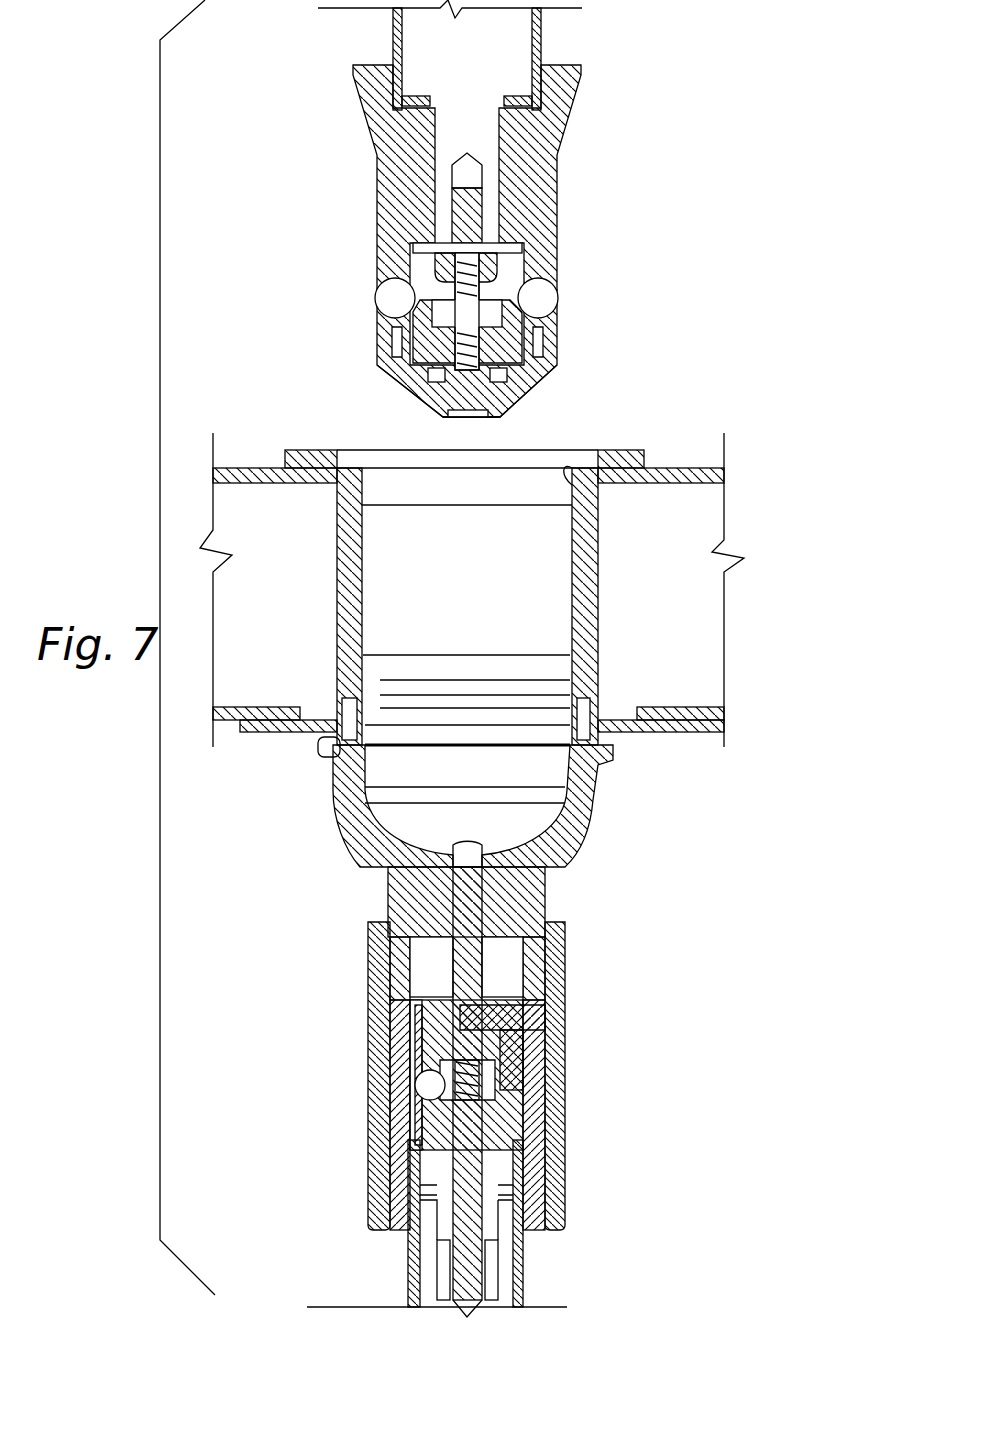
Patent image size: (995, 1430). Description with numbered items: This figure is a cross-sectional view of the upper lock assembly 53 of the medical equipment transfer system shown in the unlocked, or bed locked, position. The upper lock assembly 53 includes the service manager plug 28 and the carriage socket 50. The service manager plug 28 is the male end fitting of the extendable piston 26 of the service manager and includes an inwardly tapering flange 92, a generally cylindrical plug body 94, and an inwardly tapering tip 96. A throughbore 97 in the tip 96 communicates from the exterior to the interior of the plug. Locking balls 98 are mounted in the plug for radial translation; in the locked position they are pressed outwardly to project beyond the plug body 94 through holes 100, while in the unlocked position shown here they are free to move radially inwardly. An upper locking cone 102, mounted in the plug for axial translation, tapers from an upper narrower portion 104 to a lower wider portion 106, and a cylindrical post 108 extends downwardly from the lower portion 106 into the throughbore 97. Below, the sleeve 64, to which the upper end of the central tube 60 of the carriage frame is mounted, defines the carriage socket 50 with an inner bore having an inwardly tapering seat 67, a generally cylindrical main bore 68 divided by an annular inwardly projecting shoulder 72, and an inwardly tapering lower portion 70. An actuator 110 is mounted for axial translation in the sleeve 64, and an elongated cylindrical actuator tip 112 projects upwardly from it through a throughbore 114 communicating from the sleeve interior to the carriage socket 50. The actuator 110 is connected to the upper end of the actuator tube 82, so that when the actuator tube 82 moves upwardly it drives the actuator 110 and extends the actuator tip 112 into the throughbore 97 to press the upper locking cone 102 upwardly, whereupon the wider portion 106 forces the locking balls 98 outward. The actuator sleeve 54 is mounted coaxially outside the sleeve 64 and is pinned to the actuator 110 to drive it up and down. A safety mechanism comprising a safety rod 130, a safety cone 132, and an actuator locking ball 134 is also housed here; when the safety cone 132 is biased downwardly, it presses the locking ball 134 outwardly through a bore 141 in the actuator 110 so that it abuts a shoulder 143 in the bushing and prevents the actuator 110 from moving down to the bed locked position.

The extendable piston 26 is at (542, 32).
The service manager plug 28 is at (523, 252).
The upper lock assembly 53 is at (786, 342).
The inwardly tapering flange 92 is at (365, 105).
The cylindrical plug body 94 is at (377, 225).
The holes 100 is at (548, 270).
The locking balls 98 is at (548, 298).
The upper narrower portion 104 is at (548, 313).
The upper locking cone 102 is at (555, 345).
The lower wider portion 106 is at (545, 372).
The inwardly tapering tip 96 is at (382, 380).
The cylindrical post 108 is at (448, 415).
The throughbore 97 is at (490, 420).
The carriage socket 50 is at (472, 600).
The main bore 68 is at (340, 606).
The inwardly tapering seat 67 is at (580, 455).
The annular inwardly projecting shoulder 72 is at (335, 752).
The inwardly tapering lower portion 70 is at (345, 825).
The throughbore 114 is at (565, 862).
The actuator tip 112 is at (385, 858).
The sleeve 64 is at (547, 893).
The actuator sleeve 54 is at (453, 1031).
The actuator 110 is at (403, 1013).
The shoulder 143 is at (400, 1035).
The bore 141 is at (418, 1082).
The actuator locking ball 134 is at (415, 1095).
The safety cone 132 is at (565, 1110).
The central tube 60 is at (525, 1248).
The safety rod 130 is at (425, 1290).
The actuator tube 82 is at (500, 1282).